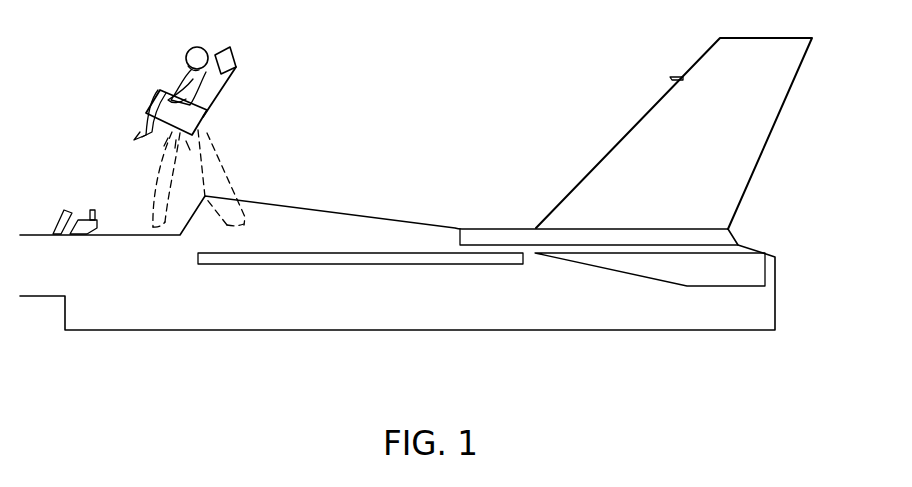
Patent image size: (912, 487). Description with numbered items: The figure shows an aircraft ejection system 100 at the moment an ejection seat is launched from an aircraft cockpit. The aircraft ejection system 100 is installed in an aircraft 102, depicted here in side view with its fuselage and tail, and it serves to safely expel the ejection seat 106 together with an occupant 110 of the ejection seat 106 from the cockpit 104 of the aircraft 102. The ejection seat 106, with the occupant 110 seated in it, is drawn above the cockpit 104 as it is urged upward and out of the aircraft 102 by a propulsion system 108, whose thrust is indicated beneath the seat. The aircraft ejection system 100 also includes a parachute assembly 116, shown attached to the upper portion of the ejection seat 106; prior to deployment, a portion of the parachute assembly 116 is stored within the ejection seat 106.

The aircraft ejection system 100 is at (318, 115).
The aircraft 102 is at (425, 301).
The cockpit 104 is at (115, 223).
The ejection seat 106 is at (190, 113).
The propulsion system 108 is at (212, 160).
The occupant 110 is at (190, 48).
The parachute assembly 116 is at (237, 57).